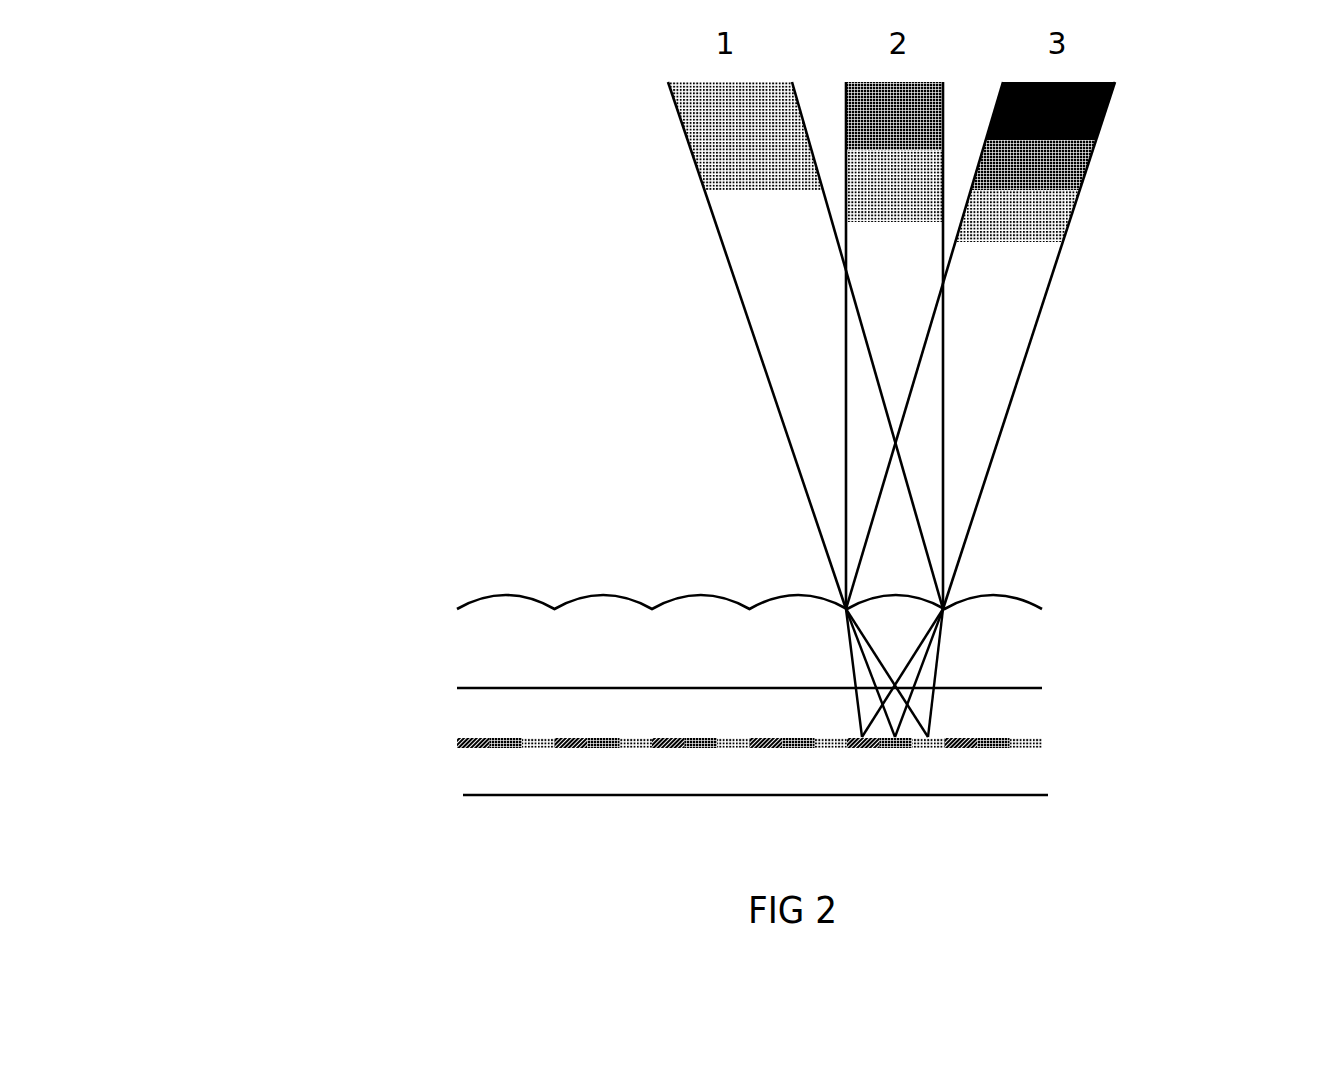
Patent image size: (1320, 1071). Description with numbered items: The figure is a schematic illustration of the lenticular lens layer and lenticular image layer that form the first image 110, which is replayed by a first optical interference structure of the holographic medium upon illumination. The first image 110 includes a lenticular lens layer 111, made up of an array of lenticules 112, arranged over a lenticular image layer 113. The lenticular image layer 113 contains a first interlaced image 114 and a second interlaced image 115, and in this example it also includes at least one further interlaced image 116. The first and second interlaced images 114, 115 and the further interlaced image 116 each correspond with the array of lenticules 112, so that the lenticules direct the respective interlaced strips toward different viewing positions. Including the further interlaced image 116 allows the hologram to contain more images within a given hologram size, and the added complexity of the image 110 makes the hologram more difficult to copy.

The first image 110 is at (718, 621).
The lenticular lens layer 111 is at (846, 580).
The array of lenticules 112 is at (749, 540).
The lenticular image layer 113 is at (848, 789).
The first interlaced image 114 is at (992, 802).
The second interlaced image 115 is at (977, 824).
The further interlaced image 116 is at (960, 844).